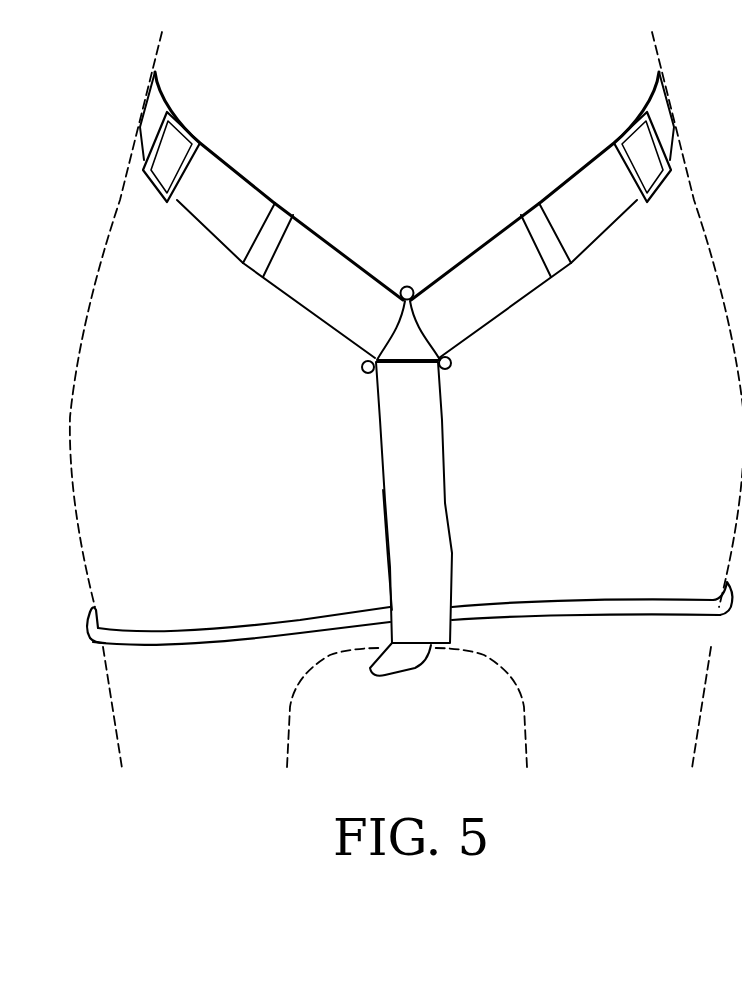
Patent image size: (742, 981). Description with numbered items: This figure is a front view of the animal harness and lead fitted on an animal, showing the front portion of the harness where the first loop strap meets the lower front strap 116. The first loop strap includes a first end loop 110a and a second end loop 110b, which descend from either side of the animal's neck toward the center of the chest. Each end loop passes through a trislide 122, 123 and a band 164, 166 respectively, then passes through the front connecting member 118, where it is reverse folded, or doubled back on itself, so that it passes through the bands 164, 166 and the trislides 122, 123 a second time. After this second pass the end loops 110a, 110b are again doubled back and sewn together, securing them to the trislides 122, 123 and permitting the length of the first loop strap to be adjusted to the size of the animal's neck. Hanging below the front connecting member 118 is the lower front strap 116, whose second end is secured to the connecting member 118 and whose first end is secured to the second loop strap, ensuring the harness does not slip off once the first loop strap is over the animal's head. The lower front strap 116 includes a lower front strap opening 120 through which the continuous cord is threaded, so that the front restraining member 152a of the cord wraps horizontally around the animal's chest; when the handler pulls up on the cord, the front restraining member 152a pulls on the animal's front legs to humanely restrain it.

The first end loop 110a is at (333, 303).
The second end loop 110b is at (487, 303).
The lower front strap 116 is at (435, 540).
The front connecting member 118 is at (450, 367).
The lower front strap opening 120 is at (383, 586).
The trislide 122 is at (188, 125).
The trislide 123 is at (633, 123).
The front restraining member 152a is at (580, 607).
The band 164 is at (257, 260).
The band 166 is at (557, 262).